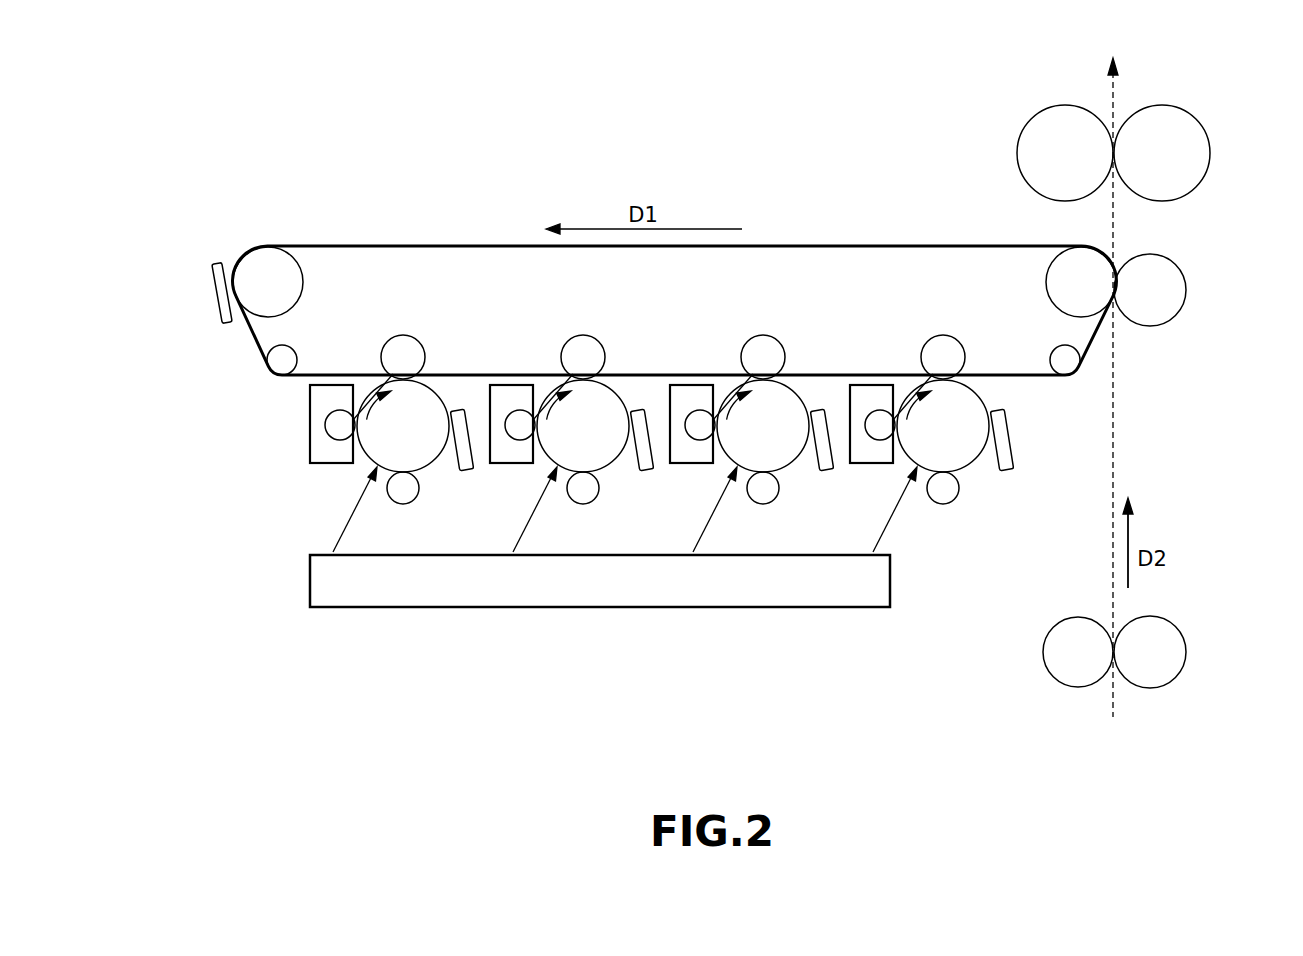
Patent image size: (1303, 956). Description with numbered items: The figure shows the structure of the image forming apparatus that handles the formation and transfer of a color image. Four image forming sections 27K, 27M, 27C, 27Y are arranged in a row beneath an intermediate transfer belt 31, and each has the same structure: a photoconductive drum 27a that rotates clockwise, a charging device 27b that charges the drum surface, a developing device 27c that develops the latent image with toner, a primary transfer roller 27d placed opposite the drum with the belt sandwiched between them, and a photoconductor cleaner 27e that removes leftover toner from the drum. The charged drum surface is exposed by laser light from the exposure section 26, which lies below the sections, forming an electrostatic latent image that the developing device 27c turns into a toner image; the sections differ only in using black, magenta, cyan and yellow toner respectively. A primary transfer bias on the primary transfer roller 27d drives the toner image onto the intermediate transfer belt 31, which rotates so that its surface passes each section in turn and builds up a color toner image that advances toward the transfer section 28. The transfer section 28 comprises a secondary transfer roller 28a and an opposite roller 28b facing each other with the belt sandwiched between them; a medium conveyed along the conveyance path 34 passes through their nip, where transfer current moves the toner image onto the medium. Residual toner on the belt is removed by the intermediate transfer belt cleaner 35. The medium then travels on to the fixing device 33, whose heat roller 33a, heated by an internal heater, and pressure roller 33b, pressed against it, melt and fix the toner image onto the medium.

The exposure section 26 is at (310, 579).
The image forming section 27K is at (383, 491).
The image forming section 27M is at (572, 509).
The image forming section 27C is at (752, 510).
The image forming section 27Y is at (932, 508).
The photoconductive drum 27a is at (437, 464).
The charging device 27b is at (405, 504).
The developing device 27c is at (325, 446).
The primary transfer roller 27d is at (403, 336).
The photoconductor cleaner 27e is at (465, 468).
The transfer section 28 is at (1117, 265).
The secondary transfer roller 28a is at (1046, 290).
The opposite roller 28b is at (1186, 290).
The intermediate transfer belt 31 is at (425, 245).
The fixing device 33 is at (1096, 132).
The heat roller 33a is at (1020, 177).
The pressure roller 33b is at (1205, 128).
The conveyance path 34 is at (1117, 447).
The intermediate transfer belt cleaner 35 is at (217, 283).